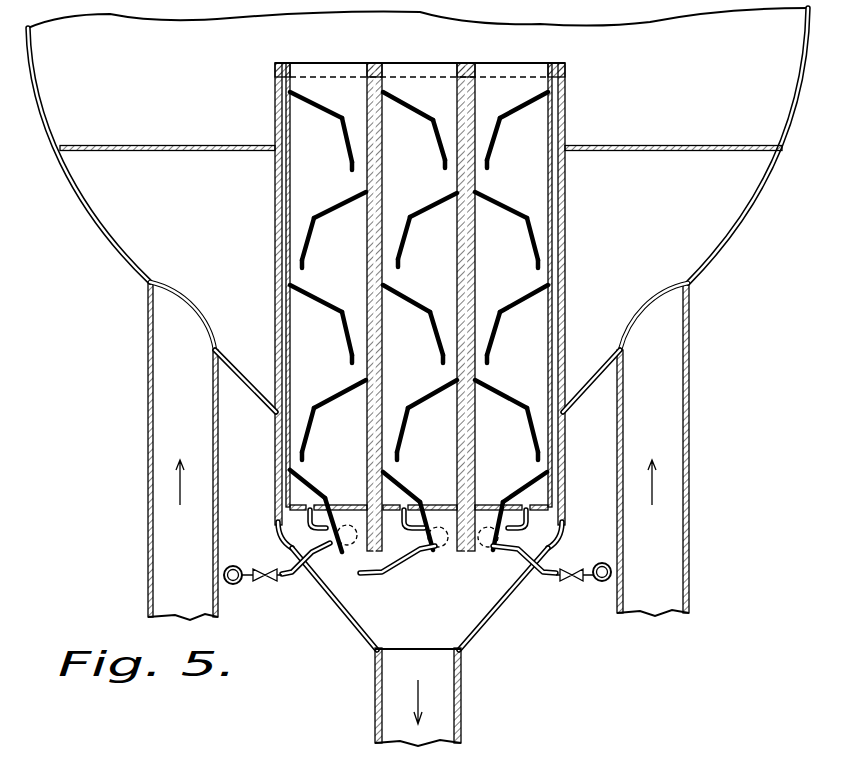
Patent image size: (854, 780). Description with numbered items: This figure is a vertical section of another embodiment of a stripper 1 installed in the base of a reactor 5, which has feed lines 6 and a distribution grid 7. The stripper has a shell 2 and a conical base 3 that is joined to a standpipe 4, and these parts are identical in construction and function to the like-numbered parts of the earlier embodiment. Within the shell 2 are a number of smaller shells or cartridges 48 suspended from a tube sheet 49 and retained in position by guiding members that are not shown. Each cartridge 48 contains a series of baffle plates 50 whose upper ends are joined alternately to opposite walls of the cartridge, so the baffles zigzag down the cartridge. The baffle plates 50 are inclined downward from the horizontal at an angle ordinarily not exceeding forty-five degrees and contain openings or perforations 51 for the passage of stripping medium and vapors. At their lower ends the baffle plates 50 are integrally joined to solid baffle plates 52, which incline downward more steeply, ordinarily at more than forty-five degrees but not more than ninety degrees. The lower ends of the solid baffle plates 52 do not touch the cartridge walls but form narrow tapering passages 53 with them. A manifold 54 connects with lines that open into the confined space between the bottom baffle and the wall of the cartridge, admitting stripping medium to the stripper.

The stripper 1 is at (566, 212).
The shell of the stripper 2 is at (276, 234).
The conical base of the stripper 3 is at (503, 608).
The standpipe 4 is at (462, 712).
The reactor 5 is at (782, 148).
The feed lines 6 is at (146, 590).
The distribution grid 7 is at (652, 145).
The cartridges 48 is at (466, 64).
The tube sheet 49 is at (342, 66).
The baffle plates 50 is at (419, 319).
The openings or perforations 51 is at (330, 112).
The solid baffle plates 52 is at (338, 150).
The narrow tapering passages 53 is at (346, 168).
The manifold 54 is at (242, 584).